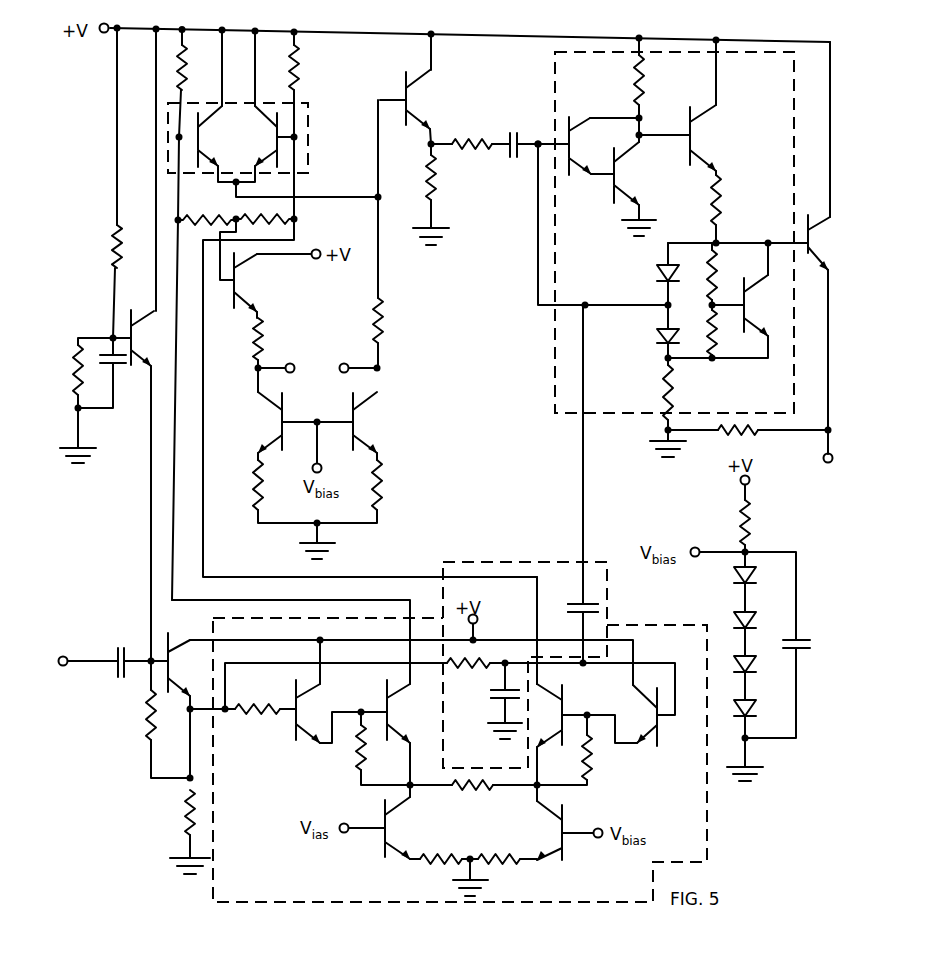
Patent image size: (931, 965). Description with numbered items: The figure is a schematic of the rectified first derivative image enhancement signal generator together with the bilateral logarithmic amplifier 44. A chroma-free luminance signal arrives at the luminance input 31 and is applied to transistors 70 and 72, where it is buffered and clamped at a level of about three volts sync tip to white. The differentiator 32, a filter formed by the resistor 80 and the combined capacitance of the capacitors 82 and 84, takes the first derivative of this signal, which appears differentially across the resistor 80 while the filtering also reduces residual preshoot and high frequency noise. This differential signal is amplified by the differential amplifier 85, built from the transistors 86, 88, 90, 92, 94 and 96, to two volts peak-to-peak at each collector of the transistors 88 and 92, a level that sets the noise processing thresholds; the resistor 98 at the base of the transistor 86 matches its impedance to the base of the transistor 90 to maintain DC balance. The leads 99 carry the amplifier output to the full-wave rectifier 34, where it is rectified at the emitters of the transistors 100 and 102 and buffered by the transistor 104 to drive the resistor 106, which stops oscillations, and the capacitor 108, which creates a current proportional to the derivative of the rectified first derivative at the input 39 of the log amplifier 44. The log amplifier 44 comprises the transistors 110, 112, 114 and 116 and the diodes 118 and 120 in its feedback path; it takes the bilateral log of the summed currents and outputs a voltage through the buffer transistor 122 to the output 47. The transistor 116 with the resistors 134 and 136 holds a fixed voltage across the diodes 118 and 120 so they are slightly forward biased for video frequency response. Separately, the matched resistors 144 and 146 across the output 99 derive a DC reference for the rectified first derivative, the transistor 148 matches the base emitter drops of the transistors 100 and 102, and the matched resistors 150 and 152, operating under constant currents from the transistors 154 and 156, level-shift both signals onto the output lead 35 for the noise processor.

The luminance input 31 is at (85, 636).
The differentiator 32 is at (502, 562).
The full-wave rectifier 34 is at (316, 130).
The output lead 35 is at (344, 362).
The log amp input 39 is at (536, 150).
The bilateral logarithmic amplifier 44 is at (552, 377).
The output of the log amplifier 47 is at (822, 458).
The transistor 70 is at (133, 312).
The transistor 72 is at (164, 651).
The resistor 80 is at (478, 672).
The capacitor 82 is at (500, 704).
The capacitor 84 is at (606, 604).
The differential amplifier 85 is at (212, 886).
The transistor 86 is at (290, 703).
The transistor 88 is at (394, 706).
The transistor 90 is at (665, 734).
The transistor 92 is at (572, 706).
The transistor 94 is at (394, 830).
The transistor 96 is at (556, 833).
The resistor 98 is at (278, 720).
The leads 99 is at (178, 578).
The transistor 100 is at (197, 152).
The transistor 102 is at (282, 150).
The transistor 104 is at (403, 88).
The resistor 106 is at (478, 138).
The capacitor 108 is at (506, 136).
The transistor 110 is at (578, 125).
The transistor 112 is at (632, 150).
The transistor 114 is at (713, 118).
The transistor 116 is at (748, 305).
The diode 118 is at (658, 272).
The diode 120 is at (657, 340).
The transistor 122 is at (800, 229).
The resistor 134 is at (716, 273).
The resistor 136 is at (718, 351).
The matched resistor 144 is at (218, 215).
The matched resistor 146 is at (283, 215).
The transistor 148 is at (241, 283).
The matched resistor 150 is at (266, 340).
The matched resistor 152 is at (385, 330).
The transistor 154 is at (276, 425).
The transistor 156 is at (362, 425).